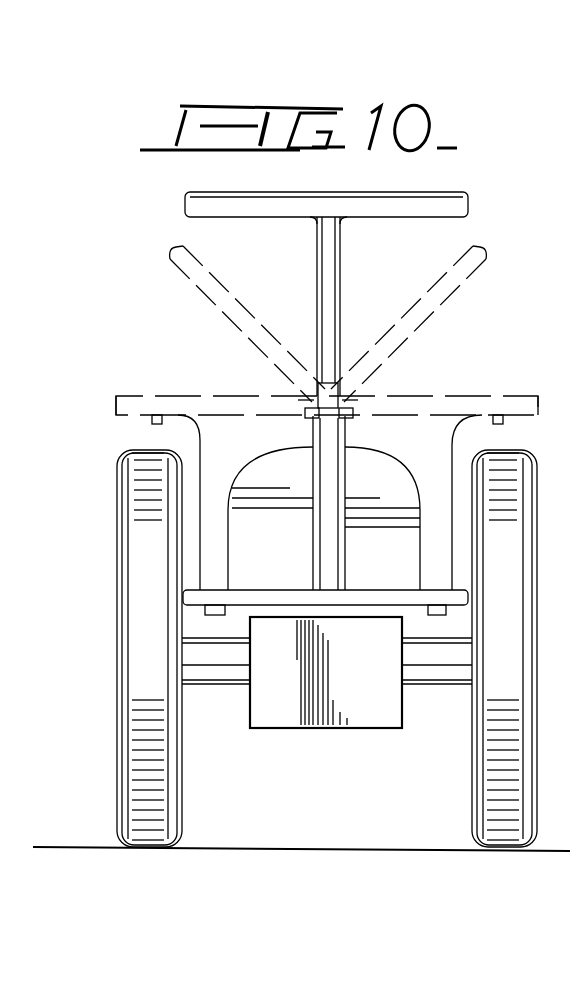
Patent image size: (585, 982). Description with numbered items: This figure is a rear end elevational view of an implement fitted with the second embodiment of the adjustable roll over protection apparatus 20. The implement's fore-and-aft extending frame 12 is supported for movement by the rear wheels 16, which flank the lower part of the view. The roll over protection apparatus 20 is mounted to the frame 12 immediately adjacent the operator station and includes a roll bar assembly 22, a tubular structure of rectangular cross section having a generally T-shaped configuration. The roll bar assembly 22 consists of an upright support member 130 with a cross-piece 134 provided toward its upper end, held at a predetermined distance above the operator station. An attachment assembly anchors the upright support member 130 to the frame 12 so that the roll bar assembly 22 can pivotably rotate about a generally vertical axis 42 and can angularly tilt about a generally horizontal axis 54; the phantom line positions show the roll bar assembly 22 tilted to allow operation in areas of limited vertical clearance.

The roll over protection apparatus 20 is at (222, 178).
The cross-piece 134 is at (436, 202).
The roll bar assembly 22 is at (351, 277).
The upright support member 130 is at (328, 268).
The horizontal axis 54 is at (310, 426).
The vertical axis 42 is at (345, 424).
The rear wheels 16 is at (142, 657).
The frame 12 is at (365, 702).